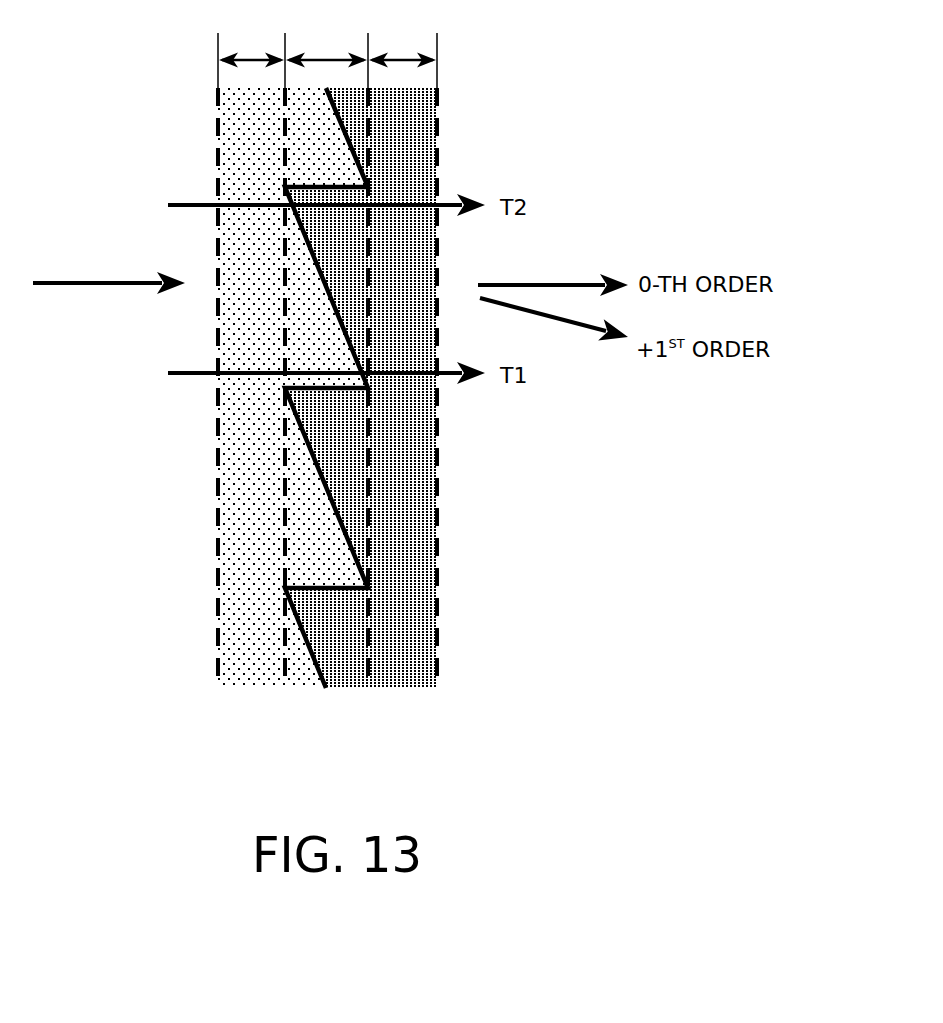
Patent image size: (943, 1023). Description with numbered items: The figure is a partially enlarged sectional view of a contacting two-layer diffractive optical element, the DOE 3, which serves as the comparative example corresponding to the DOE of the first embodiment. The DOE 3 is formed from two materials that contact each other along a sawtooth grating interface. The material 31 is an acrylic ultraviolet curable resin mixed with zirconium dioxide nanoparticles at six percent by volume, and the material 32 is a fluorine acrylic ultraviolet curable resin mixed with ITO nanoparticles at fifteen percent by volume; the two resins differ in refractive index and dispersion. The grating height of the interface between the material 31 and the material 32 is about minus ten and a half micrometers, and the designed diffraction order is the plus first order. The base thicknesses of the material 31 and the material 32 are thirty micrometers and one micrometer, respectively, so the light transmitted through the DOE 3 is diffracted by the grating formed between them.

The DOE 3 is at (322, 400).
The material 31 is at (318, 540).
The material 32 is at (335, 438).